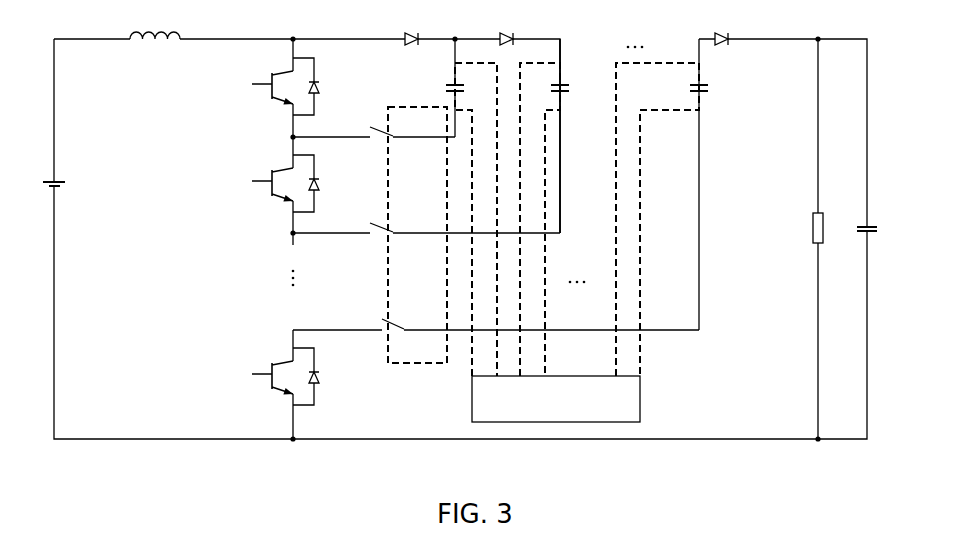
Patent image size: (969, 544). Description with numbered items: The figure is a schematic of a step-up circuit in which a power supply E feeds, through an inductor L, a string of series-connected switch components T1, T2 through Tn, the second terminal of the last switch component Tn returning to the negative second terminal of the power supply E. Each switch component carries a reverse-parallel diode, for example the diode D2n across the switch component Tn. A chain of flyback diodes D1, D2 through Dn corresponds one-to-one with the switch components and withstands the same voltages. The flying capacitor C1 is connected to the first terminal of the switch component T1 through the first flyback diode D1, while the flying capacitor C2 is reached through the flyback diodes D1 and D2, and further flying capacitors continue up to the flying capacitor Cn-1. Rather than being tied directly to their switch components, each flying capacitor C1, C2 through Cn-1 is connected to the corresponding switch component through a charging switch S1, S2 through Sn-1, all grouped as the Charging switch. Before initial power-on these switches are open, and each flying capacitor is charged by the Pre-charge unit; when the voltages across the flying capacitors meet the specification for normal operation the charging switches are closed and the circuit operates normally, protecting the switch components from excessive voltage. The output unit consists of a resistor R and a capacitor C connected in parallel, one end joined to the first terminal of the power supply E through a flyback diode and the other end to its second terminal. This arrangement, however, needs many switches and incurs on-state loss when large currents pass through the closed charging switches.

The inductor L is at (143, 24).
The power supply E is at (67, 193).
The first switch component T1 is at (257, 90).
The second switch component T2 is at (257, 189).
The Nth switch component Tn is at (266, 384).
The diode D2n is at (330, 376).
The first flyback diode D1 is at (395, 27).
The second flyback diode D2 is at (487, 27).
The Nth flyback diode Dn is at (738, 27).
The flying capacitor C1 is at (441, 88).
The flying capacitor C2 is at (575, 136).
The flying capacitor Cn-1 is at (727, 88).
The charging switch S1 is at (374, 125).
The charging switch S2 is at (426, 221).
The charging switch Sn-1 is at (496, 318).
The resistor R is at (828, 228).
The capacitor C is at (877, 232).
The charging switch Charging switch is at (403, 365).
The pre-charge unit Pre-charge unit is at (577, 242).